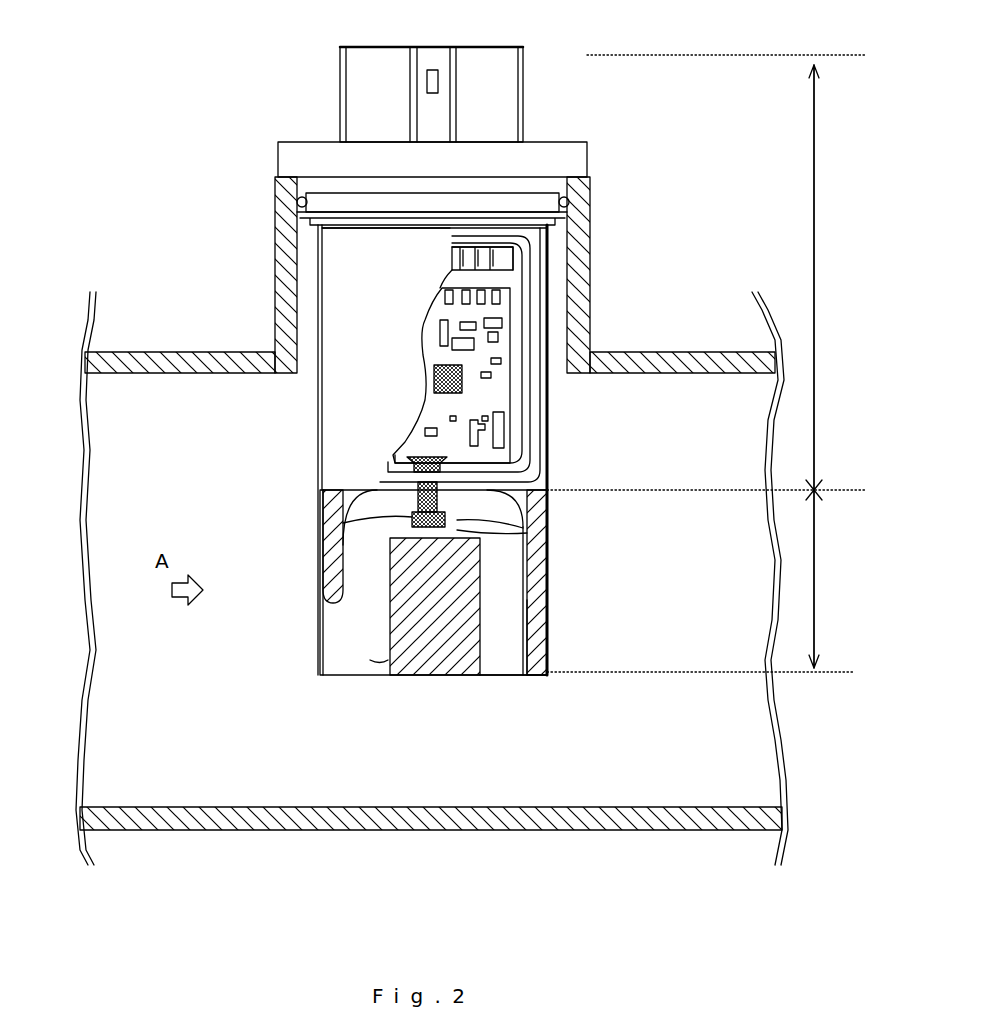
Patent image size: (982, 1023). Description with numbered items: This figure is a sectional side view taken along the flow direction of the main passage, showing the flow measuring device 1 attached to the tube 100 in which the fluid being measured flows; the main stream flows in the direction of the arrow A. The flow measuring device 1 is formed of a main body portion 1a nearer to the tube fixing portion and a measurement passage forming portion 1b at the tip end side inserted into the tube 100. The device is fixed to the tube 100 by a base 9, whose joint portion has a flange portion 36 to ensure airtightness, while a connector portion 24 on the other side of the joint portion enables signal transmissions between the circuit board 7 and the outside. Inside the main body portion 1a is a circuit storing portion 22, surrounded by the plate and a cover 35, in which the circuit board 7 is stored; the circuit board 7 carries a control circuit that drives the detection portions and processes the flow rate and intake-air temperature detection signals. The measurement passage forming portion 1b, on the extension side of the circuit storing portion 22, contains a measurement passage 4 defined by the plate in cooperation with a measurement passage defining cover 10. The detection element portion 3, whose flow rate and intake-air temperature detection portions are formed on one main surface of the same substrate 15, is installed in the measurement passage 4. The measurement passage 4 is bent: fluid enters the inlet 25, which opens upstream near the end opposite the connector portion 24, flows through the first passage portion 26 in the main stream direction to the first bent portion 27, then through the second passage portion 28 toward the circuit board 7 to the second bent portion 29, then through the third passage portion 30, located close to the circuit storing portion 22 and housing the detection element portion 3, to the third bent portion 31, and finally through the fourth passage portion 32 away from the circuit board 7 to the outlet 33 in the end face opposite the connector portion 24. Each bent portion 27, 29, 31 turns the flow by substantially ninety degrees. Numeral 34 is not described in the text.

The flow measuring device 1 is at (565, 70).
The main body portion 1a is at (814, 300).
The measurement passage forming portion 1b is at (814, 593).
The connector portion 24 is at (342, 93).
The base 9 is at (593, 135).
The flange portion 36 is at (285, 262).
The cover 35 is at (372, 362).
The circuit storing portion 22 is at (525, 323).
The circuit board 7 is at (500, 390).
The detection element portion 3 is at (405, 465).
The substrate 15 is at (345, 530).
The measurement passage 4 is at (345, 630).
The second passage portion 28 is at (357, 585).
The second bent portion 29 is at (362, 512).
The third bent portion 31 is at (503, 510).
The passage 34 is at (547, 525).
The third passage portion 30 is at (547, 545).
The fourth passage portion 32 is at (515, 598).
The first bent portion 27 is at (373, 653).
The first passage portion 26 is at (358, 658).
The inlet 25 is at (320, 655).
The measurement passage defining cover 10 is at (547, 660).
The outlet 33 is at (508, 677).
The tube 100 is at (378, 830).